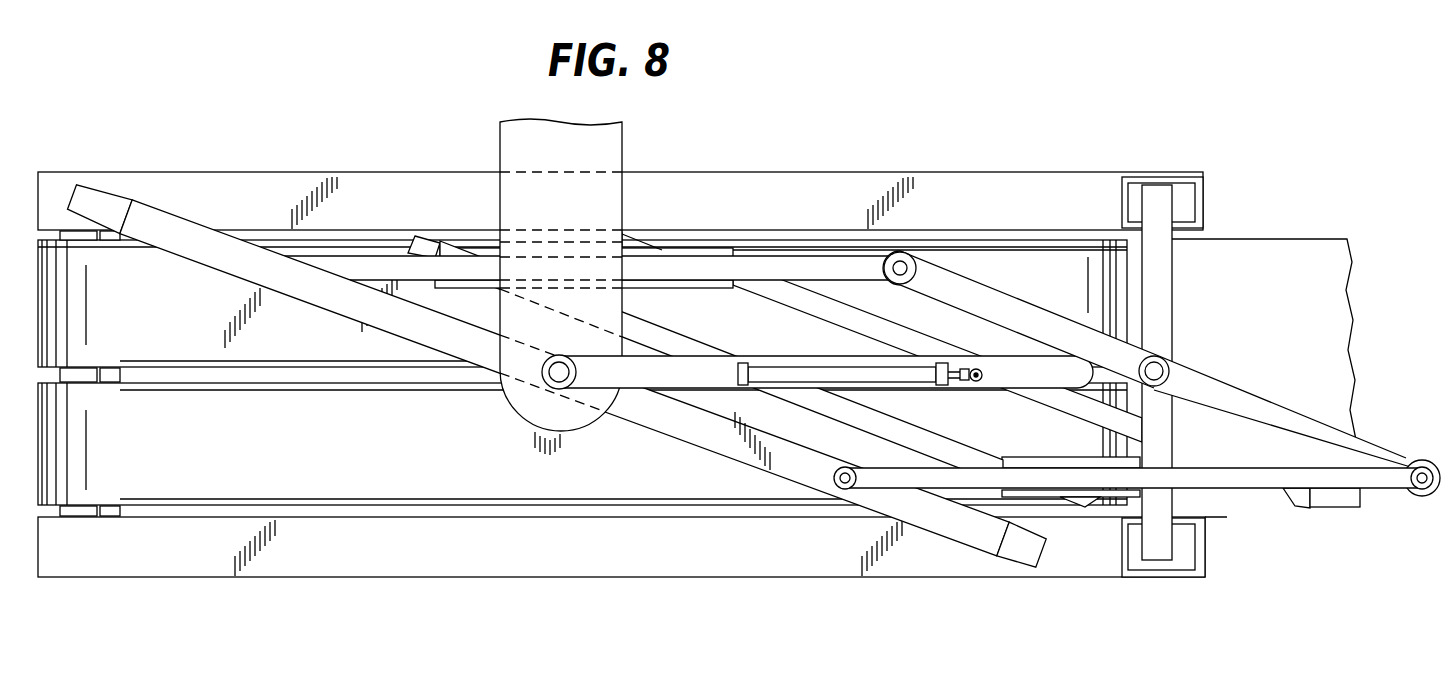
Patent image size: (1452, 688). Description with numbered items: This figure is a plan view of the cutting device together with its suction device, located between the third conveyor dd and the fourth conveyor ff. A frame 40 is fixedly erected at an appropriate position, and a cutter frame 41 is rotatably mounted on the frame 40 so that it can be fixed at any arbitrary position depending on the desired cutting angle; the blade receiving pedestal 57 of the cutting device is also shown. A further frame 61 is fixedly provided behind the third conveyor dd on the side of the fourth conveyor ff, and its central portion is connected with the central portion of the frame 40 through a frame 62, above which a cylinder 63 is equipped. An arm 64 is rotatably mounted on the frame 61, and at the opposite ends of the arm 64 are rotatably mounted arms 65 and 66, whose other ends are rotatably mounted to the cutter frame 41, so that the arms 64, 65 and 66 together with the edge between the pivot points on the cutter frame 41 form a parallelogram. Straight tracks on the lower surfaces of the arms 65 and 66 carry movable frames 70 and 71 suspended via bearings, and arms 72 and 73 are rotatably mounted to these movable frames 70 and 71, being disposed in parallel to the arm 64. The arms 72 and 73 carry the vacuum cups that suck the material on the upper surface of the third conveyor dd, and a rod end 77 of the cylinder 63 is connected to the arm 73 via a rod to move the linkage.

The frame 40 is at (622, 140).
The cutter frame 41 is at (935, 538).
The blade receiving pedestal 57 is at (1010, 562).
The frame 61 is at (1173, 211).
The frame 62 is at (1017, 353).
The cylinder 63 is at (873, 360).
The arm 64 is at (1243, 386).
The arm 65 is at (1377, 493).
The arm 66 is at (813, 254).
The movable frame 70 is at (1243, 507).
The movable frame 71 is at (693, 248).
The arm 72 is at (940, 442).
The arm 73 is at (1018, 406).
The rod end 77 is at (979, 370).
The fourth conveyor ff is at (1265, 239).
The third conveyor dd is at (632, 572).